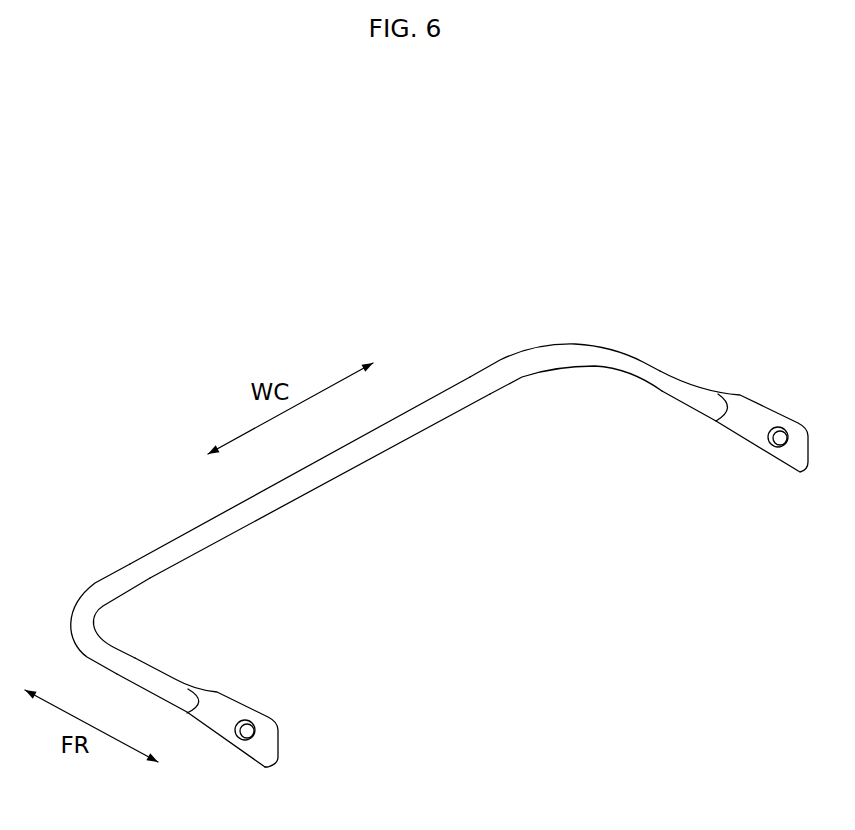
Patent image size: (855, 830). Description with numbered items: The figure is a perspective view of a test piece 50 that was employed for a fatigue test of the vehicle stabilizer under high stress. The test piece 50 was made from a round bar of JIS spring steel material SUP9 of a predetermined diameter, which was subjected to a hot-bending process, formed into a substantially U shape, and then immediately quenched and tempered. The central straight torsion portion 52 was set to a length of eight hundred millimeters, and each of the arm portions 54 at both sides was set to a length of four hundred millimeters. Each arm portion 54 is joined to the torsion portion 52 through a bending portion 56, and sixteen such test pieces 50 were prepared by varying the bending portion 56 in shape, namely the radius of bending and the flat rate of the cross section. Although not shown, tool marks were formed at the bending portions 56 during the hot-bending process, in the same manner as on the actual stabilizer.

The test piece 50 is at (581, 274).
The torsion portion 52 is at (352, 457).
The arm portion 54 is at (672, 386).
The bending portion 56 is at (600, 352).